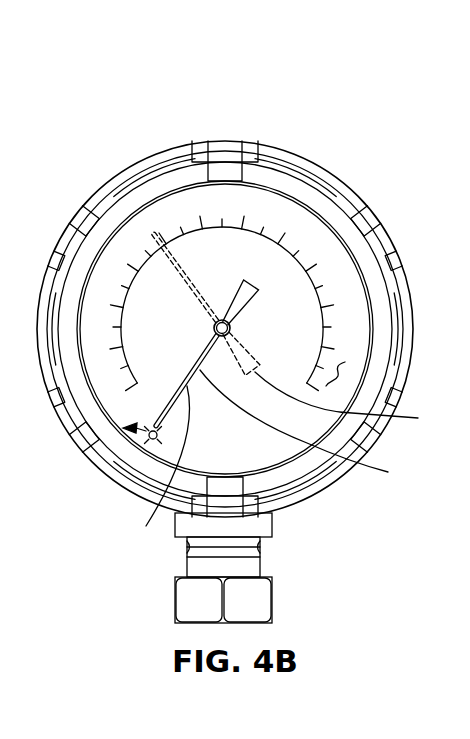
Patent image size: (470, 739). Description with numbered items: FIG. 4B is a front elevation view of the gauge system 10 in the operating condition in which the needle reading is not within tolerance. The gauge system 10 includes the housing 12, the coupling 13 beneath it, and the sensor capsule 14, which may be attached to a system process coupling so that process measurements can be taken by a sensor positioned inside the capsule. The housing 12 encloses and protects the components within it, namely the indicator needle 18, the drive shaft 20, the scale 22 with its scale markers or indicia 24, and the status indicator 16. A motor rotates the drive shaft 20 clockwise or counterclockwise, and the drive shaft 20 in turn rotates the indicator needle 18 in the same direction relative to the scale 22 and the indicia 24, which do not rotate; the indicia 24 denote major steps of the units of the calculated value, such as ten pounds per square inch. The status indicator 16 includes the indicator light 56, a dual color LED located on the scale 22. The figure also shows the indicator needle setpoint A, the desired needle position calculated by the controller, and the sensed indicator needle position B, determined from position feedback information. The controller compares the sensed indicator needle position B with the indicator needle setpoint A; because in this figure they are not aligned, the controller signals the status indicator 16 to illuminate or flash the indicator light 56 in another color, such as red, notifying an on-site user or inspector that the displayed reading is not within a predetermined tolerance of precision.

The gauge system 10 is at (94, 130).
The housing 12 is at (102, 192).
The coupling 13 is at (272, 528).
The sensor capsule 14 is at (272, 596).
The status indicator 16 is at (108, 432).
The indicator needle 18 is at (304, 425).
The drive shaft 20 is at (233, 319).
The scale 22 is at (332, 378).
The scale markers or indicia 24 is at (117, 327).
The indicator light 56 is at (150, 440).
The indicator needle setpoint A is at (342, 401).
The sensed indicator needle position B is at (156, 465).